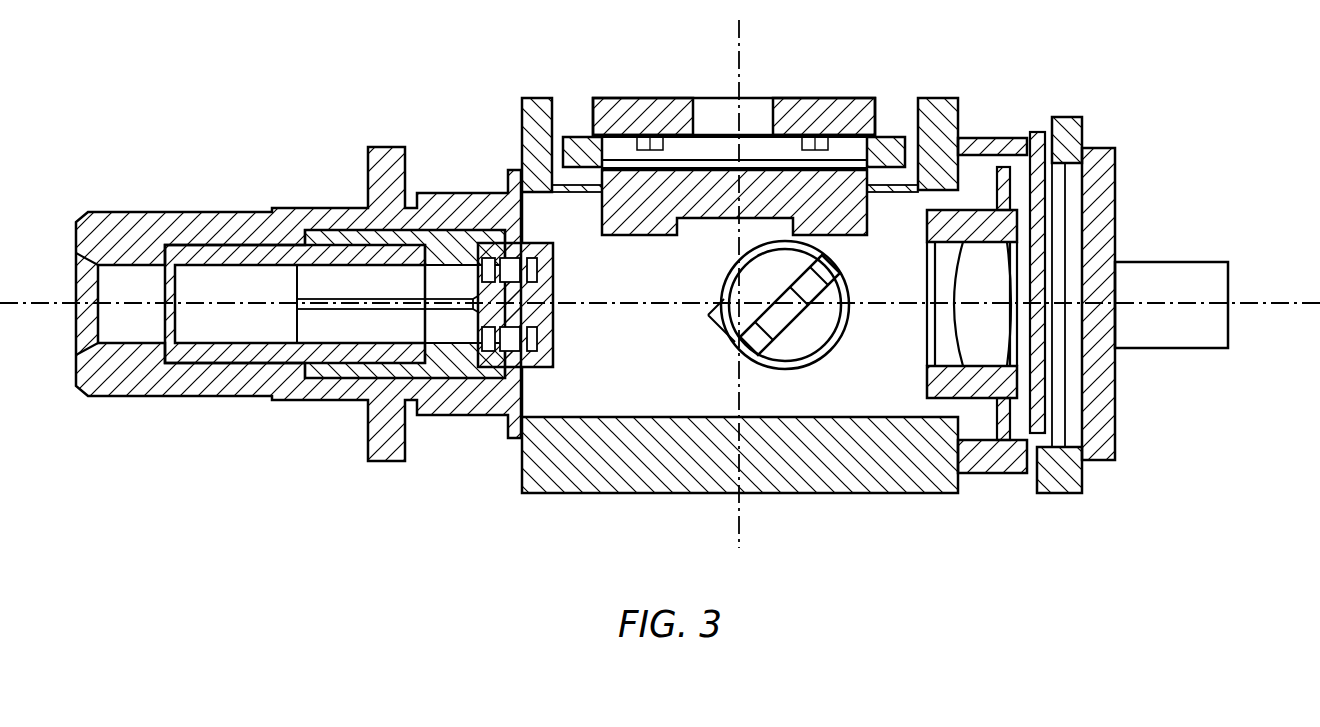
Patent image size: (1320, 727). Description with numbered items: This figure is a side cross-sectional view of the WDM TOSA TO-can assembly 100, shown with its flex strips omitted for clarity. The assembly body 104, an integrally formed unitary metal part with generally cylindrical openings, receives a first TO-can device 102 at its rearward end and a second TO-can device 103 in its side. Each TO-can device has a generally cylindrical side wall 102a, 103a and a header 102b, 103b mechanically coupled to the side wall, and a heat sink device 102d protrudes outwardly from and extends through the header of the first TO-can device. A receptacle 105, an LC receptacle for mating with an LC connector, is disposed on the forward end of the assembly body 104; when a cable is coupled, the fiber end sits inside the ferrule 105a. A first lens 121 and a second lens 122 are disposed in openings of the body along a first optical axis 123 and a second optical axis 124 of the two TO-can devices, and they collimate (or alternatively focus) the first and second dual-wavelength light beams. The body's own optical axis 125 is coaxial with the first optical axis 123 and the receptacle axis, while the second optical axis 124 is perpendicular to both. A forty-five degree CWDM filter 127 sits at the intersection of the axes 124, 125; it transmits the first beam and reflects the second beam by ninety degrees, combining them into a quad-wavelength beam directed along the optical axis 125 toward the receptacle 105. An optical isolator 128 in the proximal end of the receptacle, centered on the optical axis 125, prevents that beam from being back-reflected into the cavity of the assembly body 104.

The WDM TOSA TO-can assembly 100 is at (266, 30).
The first TO-can device 102 is at (1145, 381).
The side wall 102a is at (1080, 117).
The header 102b is at (1117, 422).
The first heat sink device 102d is at (1160, 262).
The second TO-can device 103 is at (788, 56).
The side wall 103a is at (575, 135).
The header 103b is at (827, 97).
The assembly body 104 is at (880, 480).
The receptacle 105 is at (185, 210).
The ferrule 105a is at (420, 296).
The first lens 121 is at (950, 320).
The second lens 122 is at (640, 235).
The first optical axis 123 is at (1250, 303).
The second optical axis 124 is at (740, 530).
The optical axis 125 is at (247, 307).
The 45° CWDM filter 127 is at (715, 320).
The optical isolator 128 is at (540, 368).